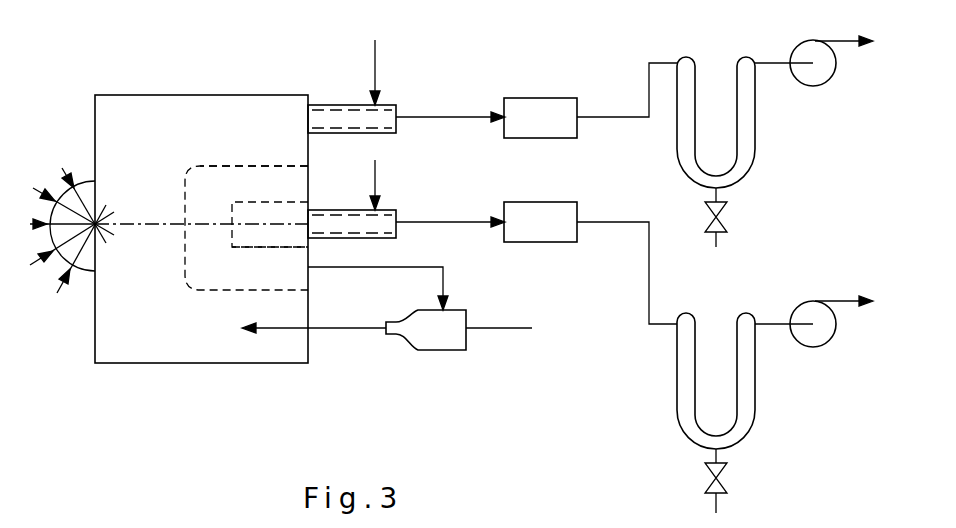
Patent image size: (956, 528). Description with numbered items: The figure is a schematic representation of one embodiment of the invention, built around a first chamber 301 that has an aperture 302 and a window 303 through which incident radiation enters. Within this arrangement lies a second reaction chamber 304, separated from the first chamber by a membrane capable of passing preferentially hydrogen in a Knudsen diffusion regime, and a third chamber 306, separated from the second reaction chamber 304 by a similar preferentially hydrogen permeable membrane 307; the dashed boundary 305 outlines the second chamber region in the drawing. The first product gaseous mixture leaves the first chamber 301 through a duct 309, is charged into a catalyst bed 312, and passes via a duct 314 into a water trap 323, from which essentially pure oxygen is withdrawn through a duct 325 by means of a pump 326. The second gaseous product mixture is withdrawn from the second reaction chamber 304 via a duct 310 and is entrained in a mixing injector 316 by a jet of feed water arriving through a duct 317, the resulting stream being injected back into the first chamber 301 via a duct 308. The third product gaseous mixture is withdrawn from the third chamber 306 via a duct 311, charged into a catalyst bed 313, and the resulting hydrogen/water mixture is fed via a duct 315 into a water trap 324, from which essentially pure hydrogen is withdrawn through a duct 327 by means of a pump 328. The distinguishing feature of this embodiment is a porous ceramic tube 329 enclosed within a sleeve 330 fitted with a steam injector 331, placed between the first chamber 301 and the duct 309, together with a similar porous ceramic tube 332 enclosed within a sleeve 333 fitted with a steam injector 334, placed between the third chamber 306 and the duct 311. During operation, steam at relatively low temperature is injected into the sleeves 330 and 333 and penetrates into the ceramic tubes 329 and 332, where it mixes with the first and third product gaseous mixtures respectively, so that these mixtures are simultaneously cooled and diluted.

The first chamber 301 is at (134, 108).
The aperture 302 is at (108, 210).
The window 303 is at (56, 188).
The second reaction chamber 304 is at (242, 176).
The reaction region 305 is at (221, 165).
The third chamber 306 is at (255, 212).
The preferentially hydrogen permeable membrane 307 is at (252, 247).
The duct 308 is at (339, 330).
The duct 309 is at (433, 117).
The duct 310 is at (392, 269).
The duct 311 is at (432, 222).
The catalyst bed 312 is at (528, 98).
The catalyst bed 313 is at (531, 202).
The duct 314 is at (602, 117).
The duct 315 is at (604, 221).
The mixing injector 316 is at (435, 343).
The duct 317 is at (510, 329).
The water trap 323 is at (695, 73).
The water trap 324 is at (697, 330).
The duct 325 is at (769, 67).
The pump 326 is at (820, 83).
The duct 327 is at (771, 320).
The pump 328 is at (812, 347).
The porous ceramic tube 329 is at (319, 129).
The sleeve 330 is at (332, 103).
The steam injector 331 is at (376, 74).
The porous ceramic tube 332 is at (322, 214).
The sleeve 333 is at (388, 238).
The steam injector 334 is at (376, 179).